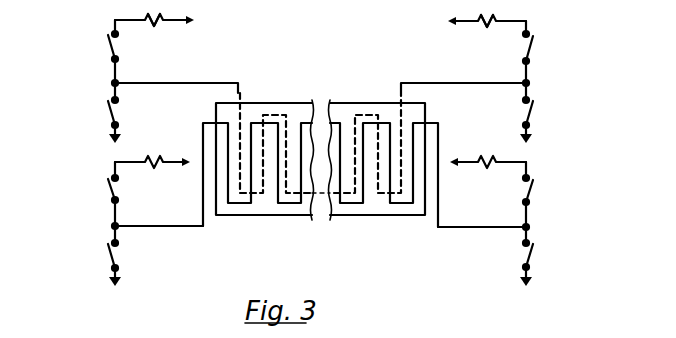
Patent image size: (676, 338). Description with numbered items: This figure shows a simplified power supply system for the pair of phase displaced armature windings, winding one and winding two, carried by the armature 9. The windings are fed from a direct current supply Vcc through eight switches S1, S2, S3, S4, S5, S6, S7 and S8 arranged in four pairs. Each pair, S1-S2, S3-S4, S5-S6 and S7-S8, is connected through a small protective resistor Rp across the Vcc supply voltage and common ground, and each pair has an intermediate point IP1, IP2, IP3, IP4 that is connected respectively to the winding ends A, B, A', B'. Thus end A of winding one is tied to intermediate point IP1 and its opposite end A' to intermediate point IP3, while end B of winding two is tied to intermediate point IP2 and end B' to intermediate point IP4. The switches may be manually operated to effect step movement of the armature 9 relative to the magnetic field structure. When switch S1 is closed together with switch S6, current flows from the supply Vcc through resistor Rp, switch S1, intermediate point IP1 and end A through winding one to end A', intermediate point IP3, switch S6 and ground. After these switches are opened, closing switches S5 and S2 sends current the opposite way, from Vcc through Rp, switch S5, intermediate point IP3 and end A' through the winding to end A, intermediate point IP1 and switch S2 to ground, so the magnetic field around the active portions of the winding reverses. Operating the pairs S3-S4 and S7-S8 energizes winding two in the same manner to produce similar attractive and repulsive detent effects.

The armature 9 is at (374, 103).
The switch S1 is at (107, 48).
The switch S2 is at (108, 108).
The switch S3 is at (108, 186).
The switch S4 is at (108, 253).
The switch S5 is at (531, 48).
The switch S6 is at (531, 112).
The switch S7 is at (531, 189).
The switch S8 is at (531, 253).
The intermediate point IP1 is at (112, 83).
The intermediate point IP2 is at (112, 226).
The intermediate point IP3 is at (530, 83).
The intermediate point IP4 is at (530, 227).
The protective resistor Rp is at (153, 21).
The direct current supply Vcc is at (320, 100).
The end of winding #1 A is at (258, 127).
The end of winding #1 A' is at (373, 129).
The end of winding #2 B is at (254, 187).
The end of winding #2 B' is at (399, 188).